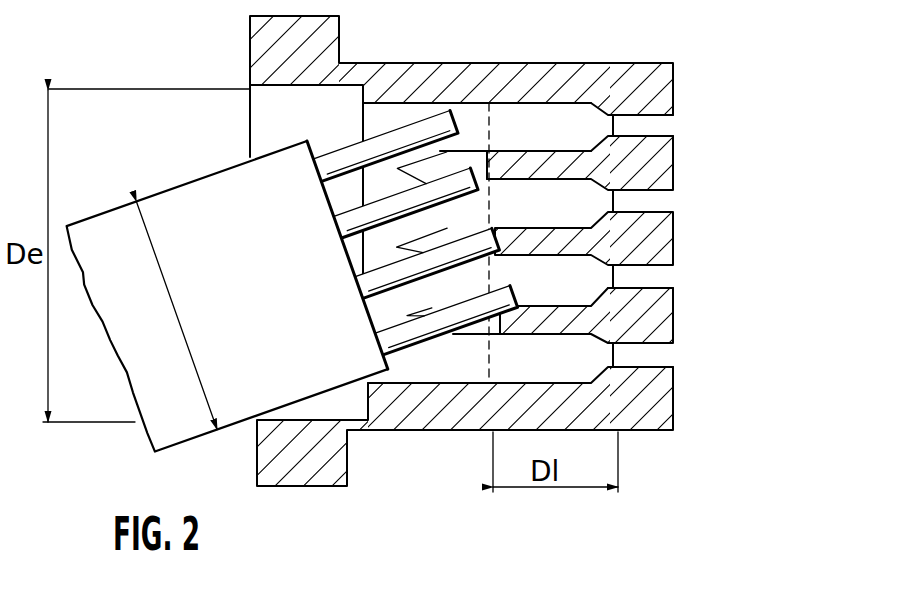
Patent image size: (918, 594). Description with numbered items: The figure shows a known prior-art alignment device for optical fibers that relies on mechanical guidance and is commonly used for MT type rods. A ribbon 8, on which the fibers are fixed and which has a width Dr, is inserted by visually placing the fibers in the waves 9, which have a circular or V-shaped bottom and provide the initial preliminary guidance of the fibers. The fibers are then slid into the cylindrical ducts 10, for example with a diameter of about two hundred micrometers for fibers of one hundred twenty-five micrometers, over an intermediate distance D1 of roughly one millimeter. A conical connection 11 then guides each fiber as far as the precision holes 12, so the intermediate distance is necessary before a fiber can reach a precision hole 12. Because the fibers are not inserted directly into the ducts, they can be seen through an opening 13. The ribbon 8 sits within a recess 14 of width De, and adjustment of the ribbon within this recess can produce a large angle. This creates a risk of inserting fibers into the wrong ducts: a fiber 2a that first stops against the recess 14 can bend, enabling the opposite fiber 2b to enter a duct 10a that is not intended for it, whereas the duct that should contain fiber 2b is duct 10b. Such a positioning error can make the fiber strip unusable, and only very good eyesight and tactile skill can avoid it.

The fiber 2a is at (351, 152).
The fiber 2b is at (416, 332).
The ribbon 8 is at (207, 190).
The waves 9 is at (472, 120).
The cylindrical ducts 10 is at (542, 120).
The duct 10a is at (583, 287).
The duct 10b is at (515, 370).
The conical connection 11 is at (606, 116).
The precision holes 12 is at (660, 127).
The opening 13 is at (470, 212).
The recess 14 is at (265, 115).